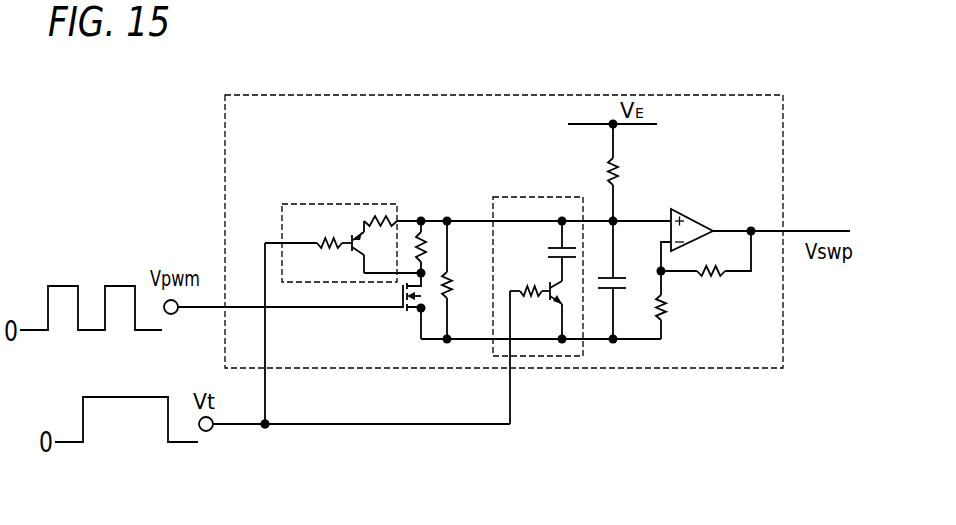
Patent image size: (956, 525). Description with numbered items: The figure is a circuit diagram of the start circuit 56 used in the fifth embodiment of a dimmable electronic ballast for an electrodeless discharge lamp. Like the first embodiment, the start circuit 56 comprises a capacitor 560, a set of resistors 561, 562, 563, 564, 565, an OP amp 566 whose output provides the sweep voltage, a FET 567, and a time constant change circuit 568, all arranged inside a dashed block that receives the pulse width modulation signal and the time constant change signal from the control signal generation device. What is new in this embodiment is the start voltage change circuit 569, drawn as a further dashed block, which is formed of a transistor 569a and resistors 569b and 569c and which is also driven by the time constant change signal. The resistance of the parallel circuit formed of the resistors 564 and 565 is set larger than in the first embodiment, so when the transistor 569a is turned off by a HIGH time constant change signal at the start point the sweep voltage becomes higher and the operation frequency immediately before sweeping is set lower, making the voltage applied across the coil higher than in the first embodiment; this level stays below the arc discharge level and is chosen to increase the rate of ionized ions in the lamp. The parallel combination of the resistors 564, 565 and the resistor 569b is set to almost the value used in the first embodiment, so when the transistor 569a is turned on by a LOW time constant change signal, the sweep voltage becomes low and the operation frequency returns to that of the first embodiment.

The start circuit 56 is at (295, 97).
The start voltage change circuit 569 is at (303, 202).
The transistor 569a is at (357, 250).
The resistor 569b is at (380, 208).
The resistor 569c is at (317, 247).
The resistor 564 is at (427, 240).
The FET 567 is at (413, 310).
The resistor 565 is at (453, 297).
The time constant change circuit 568 is at (528, 197).
The resistor 561 is at (617, 166).
The capacitor 560 is at (617, 292).
The OP amp 566 is at (688, 210).
The resistor 563 is at (712, 275).
The resistor 562 is at (667, 313).